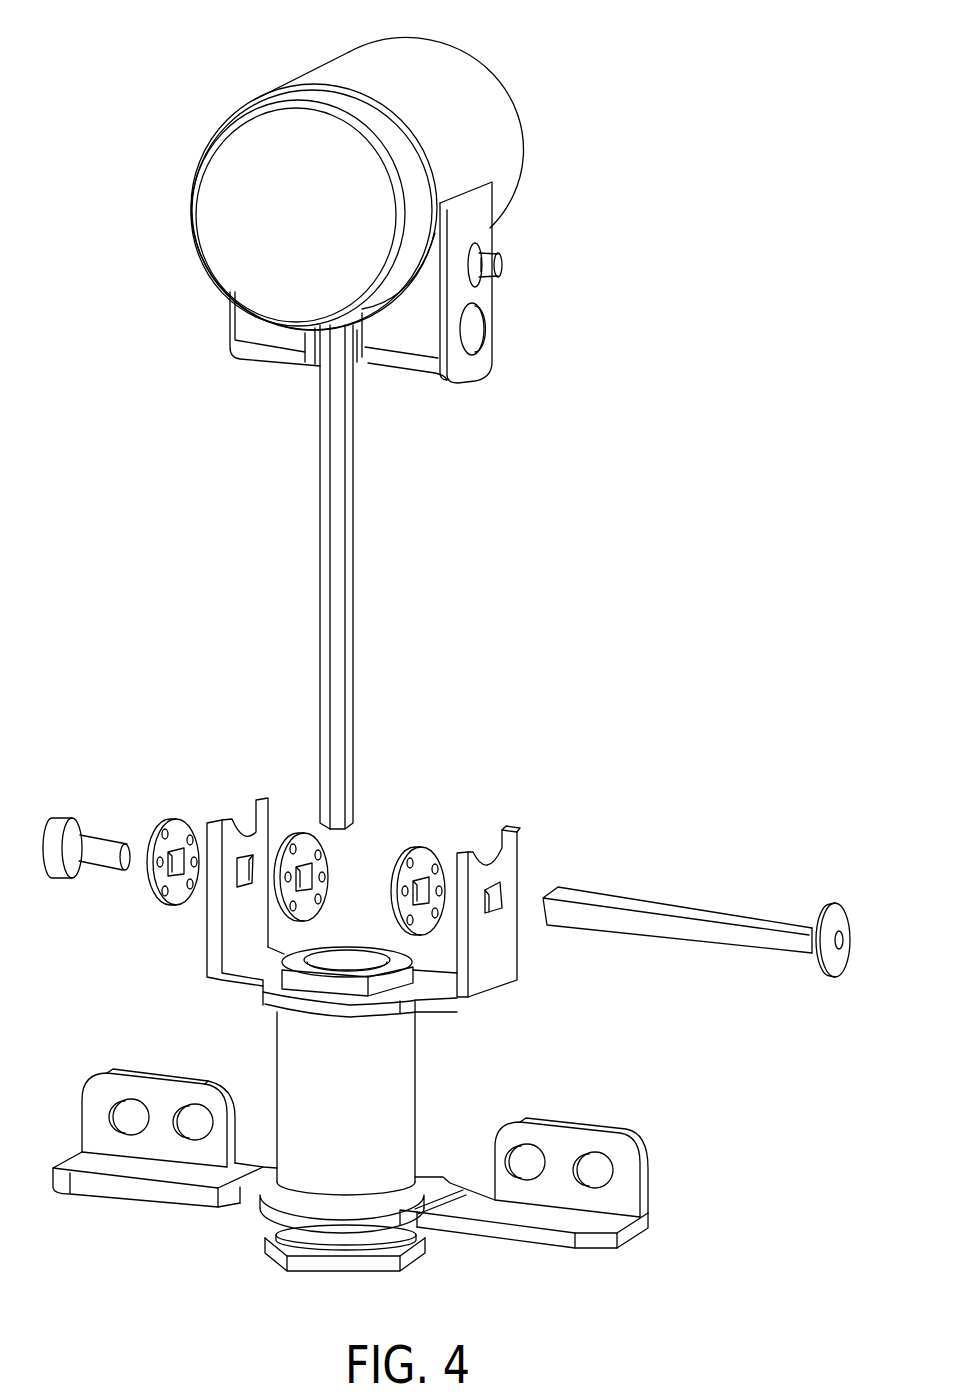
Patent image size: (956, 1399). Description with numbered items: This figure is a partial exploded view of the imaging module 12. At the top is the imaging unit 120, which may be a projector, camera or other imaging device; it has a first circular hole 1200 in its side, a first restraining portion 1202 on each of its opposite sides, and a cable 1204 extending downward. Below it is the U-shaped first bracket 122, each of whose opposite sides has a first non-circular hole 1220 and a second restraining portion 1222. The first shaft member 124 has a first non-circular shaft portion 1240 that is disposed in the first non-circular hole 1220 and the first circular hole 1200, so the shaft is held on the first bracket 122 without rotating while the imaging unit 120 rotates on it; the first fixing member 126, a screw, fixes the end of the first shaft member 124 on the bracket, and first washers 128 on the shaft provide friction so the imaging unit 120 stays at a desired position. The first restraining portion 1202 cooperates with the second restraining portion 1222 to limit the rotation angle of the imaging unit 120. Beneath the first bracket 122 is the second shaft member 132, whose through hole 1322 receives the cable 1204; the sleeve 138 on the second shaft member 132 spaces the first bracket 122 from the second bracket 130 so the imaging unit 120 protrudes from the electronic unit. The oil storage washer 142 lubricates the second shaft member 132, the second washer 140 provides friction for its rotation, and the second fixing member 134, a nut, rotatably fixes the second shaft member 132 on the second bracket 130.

The imaging module 12 is at (158, 120).
The imaging unit 120 is at (337, 58).
The first circular hole 1200 is at (470, 331).
The first restraining portion 1202 is at (504, 264).
The cable 1204 is at (355, 504).
The first bracket 122 is at (205, 950).
The first non-circular hole 1220 is at (500, 895).
The second restraining portion 1222 is at (506, 834).
The first shaft member 124 is at (853, 917).
The first non-circular shaft portion 1240 is at (664, 901).
The first fixing member 126 is at (72, 820).
The first washer 128 is at (177, 817).
The second bracket 130 is at (600, 1130).
The second shaft member 132 is at (475, 982).
The through hole 1322 is at (355, 957).
The second fixing member 134 is at (343, 1265).
The sleeve 138 is at (418, 1068).
The second washer 140 is at (402, 1238).
The oil storage washer 142 is at (285, 1190).